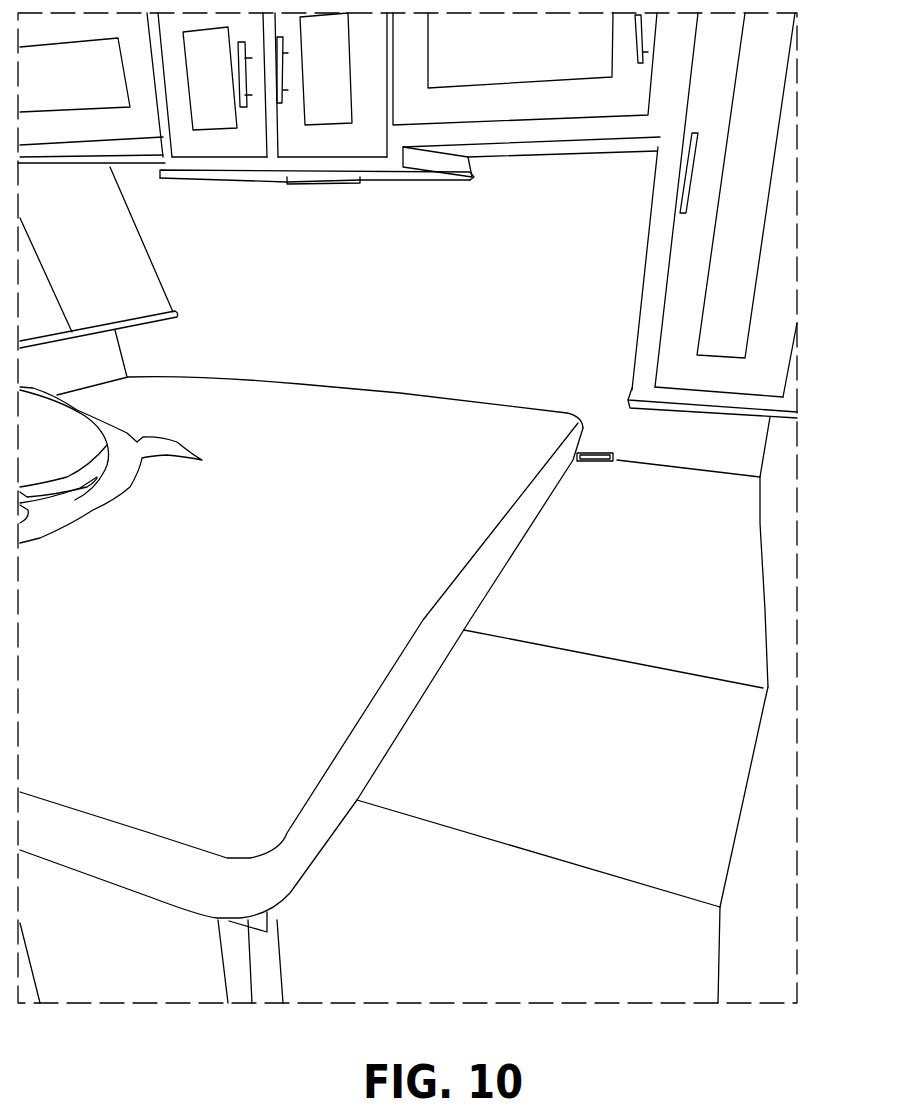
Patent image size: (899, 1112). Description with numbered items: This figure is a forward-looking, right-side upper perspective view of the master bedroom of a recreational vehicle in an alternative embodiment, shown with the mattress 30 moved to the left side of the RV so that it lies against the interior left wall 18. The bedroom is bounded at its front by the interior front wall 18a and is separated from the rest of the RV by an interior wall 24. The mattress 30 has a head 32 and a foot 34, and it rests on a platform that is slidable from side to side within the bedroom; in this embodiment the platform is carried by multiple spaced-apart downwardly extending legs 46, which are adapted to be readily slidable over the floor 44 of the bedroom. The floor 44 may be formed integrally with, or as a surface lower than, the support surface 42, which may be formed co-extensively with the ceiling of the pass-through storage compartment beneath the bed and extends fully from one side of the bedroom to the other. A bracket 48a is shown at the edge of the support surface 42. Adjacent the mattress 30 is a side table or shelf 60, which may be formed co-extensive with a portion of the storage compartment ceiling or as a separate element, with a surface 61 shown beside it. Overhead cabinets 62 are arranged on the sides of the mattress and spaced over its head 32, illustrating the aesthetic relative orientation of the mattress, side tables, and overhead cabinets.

The interior left wall 18 is at (75, 360).
The interior front wall 18a is at (468, 261).
The interior wall 24 is at (27, 967).
The mattress 30 is at (301, 654).
The head of the mattress 32 is at (352, 440).
The foot of the mattress 34 is at (95, 751).
The support surface 42 is at (580, 510).
The floor of the bedroom 44 is at (573, 966).
The downwardly extending leg 46 is at (267, 970).
The mounting bracket 48a is at (613, 455).
The side table 60 is at (658, 800).
The bench seat 61 is at (699, 625).
The overhead cabinet 62 is at (93, 257).